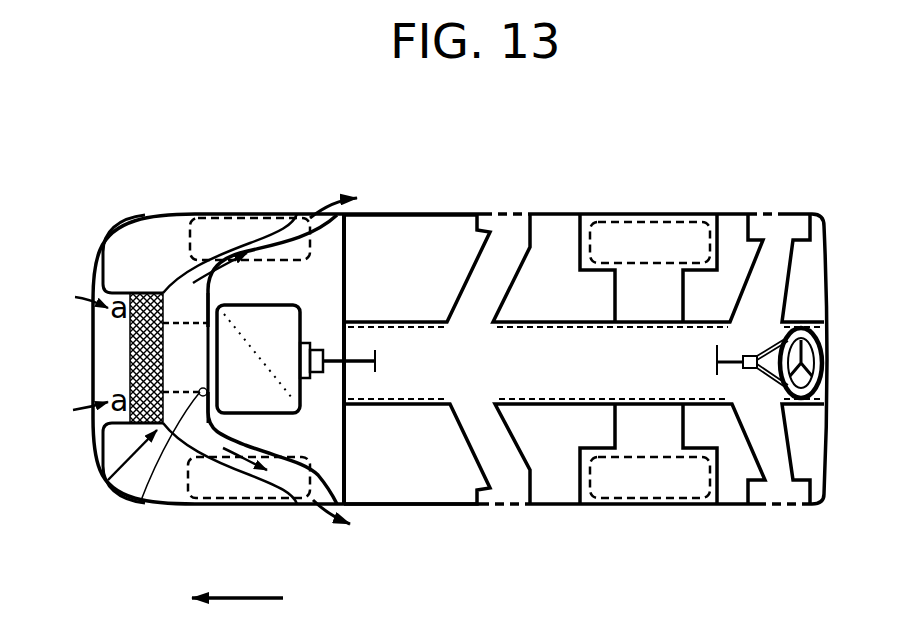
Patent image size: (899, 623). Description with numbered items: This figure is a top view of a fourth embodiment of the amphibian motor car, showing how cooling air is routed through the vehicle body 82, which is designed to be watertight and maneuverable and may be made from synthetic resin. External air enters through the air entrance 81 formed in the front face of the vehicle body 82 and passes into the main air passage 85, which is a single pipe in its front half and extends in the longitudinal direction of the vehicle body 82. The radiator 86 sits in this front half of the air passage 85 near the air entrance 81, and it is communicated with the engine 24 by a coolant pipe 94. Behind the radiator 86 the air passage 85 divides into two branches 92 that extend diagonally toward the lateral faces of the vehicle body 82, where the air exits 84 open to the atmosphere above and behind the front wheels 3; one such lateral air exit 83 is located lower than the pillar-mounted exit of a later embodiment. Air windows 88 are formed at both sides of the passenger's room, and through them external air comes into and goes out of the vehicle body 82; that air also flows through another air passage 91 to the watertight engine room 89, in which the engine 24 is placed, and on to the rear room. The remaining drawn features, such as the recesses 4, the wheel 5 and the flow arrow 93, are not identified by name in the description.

The front wheels 3 is at (207, 217).
The light recess 4 is at (658, 217).
The fan wheel 5 is at (822, 388).
The engine 24 is at (285, 332).
The air entrance 81 is at (85, 386).
The vehicle body 82 is at (372, 212).
The air exit 83 is at (278, 212).
The air exits 84 is at (307, 213).
The air passage 85 is at (96, 360).
The radiator 86 is at (128, 332).
The air windows 88 is at (507, 214).
The engine room 89 is at (333, 445).
The air passage 91 is at (493, 289).
The branches 92 is at (239, 245).
The air flow arrow 93 is at (105, 480).
The coolant pipe 94 is at (148, 502).